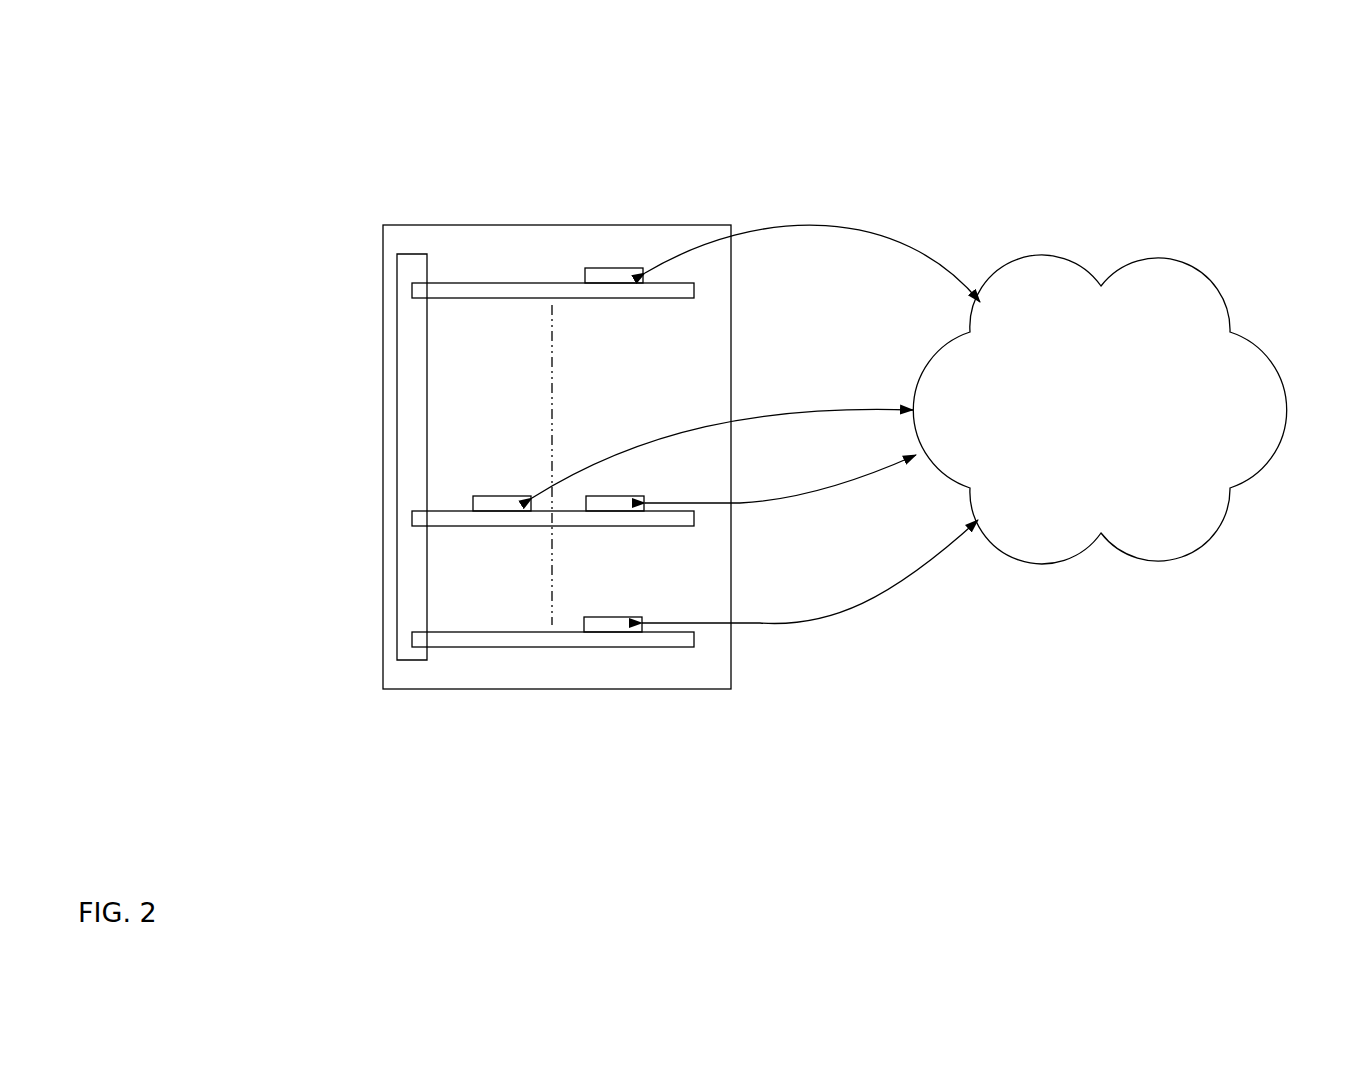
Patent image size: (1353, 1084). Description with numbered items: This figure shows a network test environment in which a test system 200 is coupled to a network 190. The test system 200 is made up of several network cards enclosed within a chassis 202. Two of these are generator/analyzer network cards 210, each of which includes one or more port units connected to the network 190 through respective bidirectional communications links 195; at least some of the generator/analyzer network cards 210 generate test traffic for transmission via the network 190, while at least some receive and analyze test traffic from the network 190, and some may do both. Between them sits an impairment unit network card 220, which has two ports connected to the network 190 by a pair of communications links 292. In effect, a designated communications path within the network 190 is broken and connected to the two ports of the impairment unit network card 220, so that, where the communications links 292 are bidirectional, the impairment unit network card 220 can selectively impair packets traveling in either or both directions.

The test system 200 is at (455, 138).
The chassis 202 is at (620, 225).
The generator/analyzer network card 210 is at (457, 283).
The impairment unit network card 220 is at (457, 511).
The network 190 is at (1099, 409).
The bidirectional communications link 195 is at (832, 224).
The communications link 292 is at (780, 411).